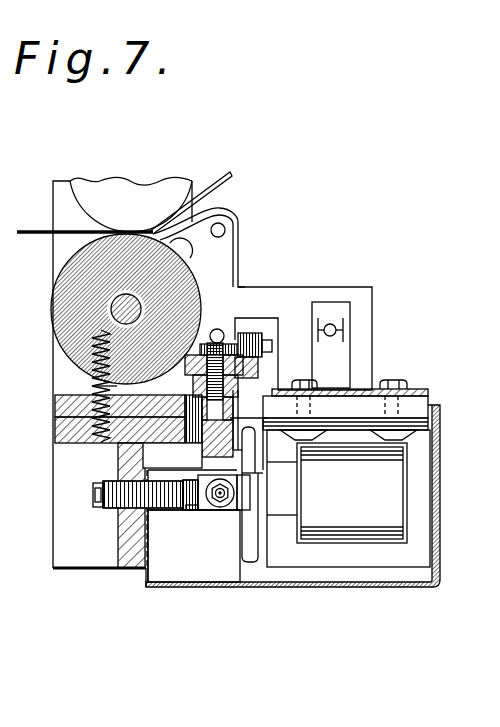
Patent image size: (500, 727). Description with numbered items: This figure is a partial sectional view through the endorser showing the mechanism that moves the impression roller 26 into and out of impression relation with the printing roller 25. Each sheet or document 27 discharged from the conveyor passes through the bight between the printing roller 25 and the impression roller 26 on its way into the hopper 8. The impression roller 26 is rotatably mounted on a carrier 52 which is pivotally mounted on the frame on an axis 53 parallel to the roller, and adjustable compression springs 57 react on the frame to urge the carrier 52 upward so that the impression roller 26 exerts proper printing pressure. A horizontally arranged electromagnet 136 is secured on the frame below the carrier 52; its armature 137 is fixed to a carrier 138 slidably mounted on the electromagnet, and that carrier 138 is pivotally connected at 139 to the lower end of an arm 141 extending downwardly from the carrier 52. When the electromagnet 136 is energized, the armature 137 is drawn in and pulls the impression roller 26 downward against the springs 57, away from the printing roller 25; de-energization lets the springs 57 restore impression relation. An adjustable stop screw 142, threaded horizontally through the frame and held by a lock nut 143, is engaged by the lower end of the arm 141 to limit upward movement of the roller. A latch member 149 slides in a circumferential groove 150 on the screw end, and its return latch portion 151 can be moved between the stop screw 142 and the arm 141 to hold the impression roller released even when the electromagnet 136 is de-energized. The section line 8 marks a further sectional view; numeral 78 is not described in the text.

The hopper 8 is at (110, 459).
The printing roller 25 is at (173, 183).
The impression roller 26 is at (51, 310).
The sheet or document 27 is at (230, 172).
The carrier 52 is at (240, 334).
The pivotal axis of the carrier 53 is at (219, 331).
The adjustable compression springs 57 is at (97, 388).
The frame plate 78 is at (60, 382).
The electromagnet 136 is at (387, 478).
The armature 137 is at (253, 560).
The carrier 138 is at (283, 517).
The pivotal connection 139 is at (217, 510).
The arm 141 is at (213, 447).
The adjustable stop screw 142 is at (93, 502).
The lock nut 143 is at (113, 518).
The latch member 149 is at (195, 510).
The circumferential groove 150 is at (190, 512).
The return latch portion 151 is at (194, 546).